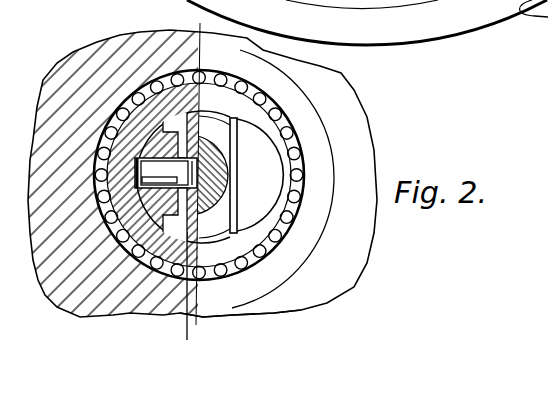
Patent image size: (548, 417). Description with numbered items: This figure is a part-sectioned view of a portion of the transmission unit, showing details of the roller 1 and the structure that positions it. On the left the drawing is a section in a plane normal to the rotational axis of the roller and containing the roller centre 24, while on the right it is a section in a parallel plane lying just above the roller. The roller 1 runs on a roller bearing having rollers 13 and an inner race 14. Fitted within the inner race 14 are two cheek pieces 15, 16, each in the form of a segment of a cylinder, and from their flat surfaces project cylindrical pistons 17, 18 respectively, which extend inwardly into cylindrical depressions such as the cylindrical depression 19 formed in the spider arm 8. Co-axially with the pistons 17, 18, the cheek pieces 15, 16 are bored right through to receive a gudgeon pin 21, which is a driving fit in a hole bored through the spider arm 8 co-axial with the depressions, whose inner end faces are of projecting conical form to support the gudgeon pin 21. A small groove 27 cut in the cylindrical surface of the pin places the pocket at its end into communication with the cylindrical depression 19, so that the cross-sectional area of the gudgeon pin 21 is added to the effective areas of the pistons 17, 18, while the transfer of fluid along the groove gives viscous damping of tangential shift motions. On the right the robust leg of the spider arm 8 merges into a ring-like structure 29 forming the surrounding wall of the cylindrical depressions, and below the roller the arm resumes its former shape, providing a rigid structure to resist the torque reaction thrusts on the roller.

The roller 1 is at (355, 261).
The spider arm 8 is at (237, 184).
The rollers 13 is at (297, 147).
The inner race 14 is at (157, 215).
The cheek piece 15 is at (113, 215).
The cheek piece 16 is at (245, 298).
The cylindrical piston 17 is at (178, 240).
The cylindrical piston 18 is at (235, 218).
The cylindrical depression 19 is at (137, 215).
The gudgeon pin 21 is at (123, 112).
The roller centre 24 is at (237, 189).
The groove 27 is at (100, 152).
The ring-like structure 29 is at (172, 67).